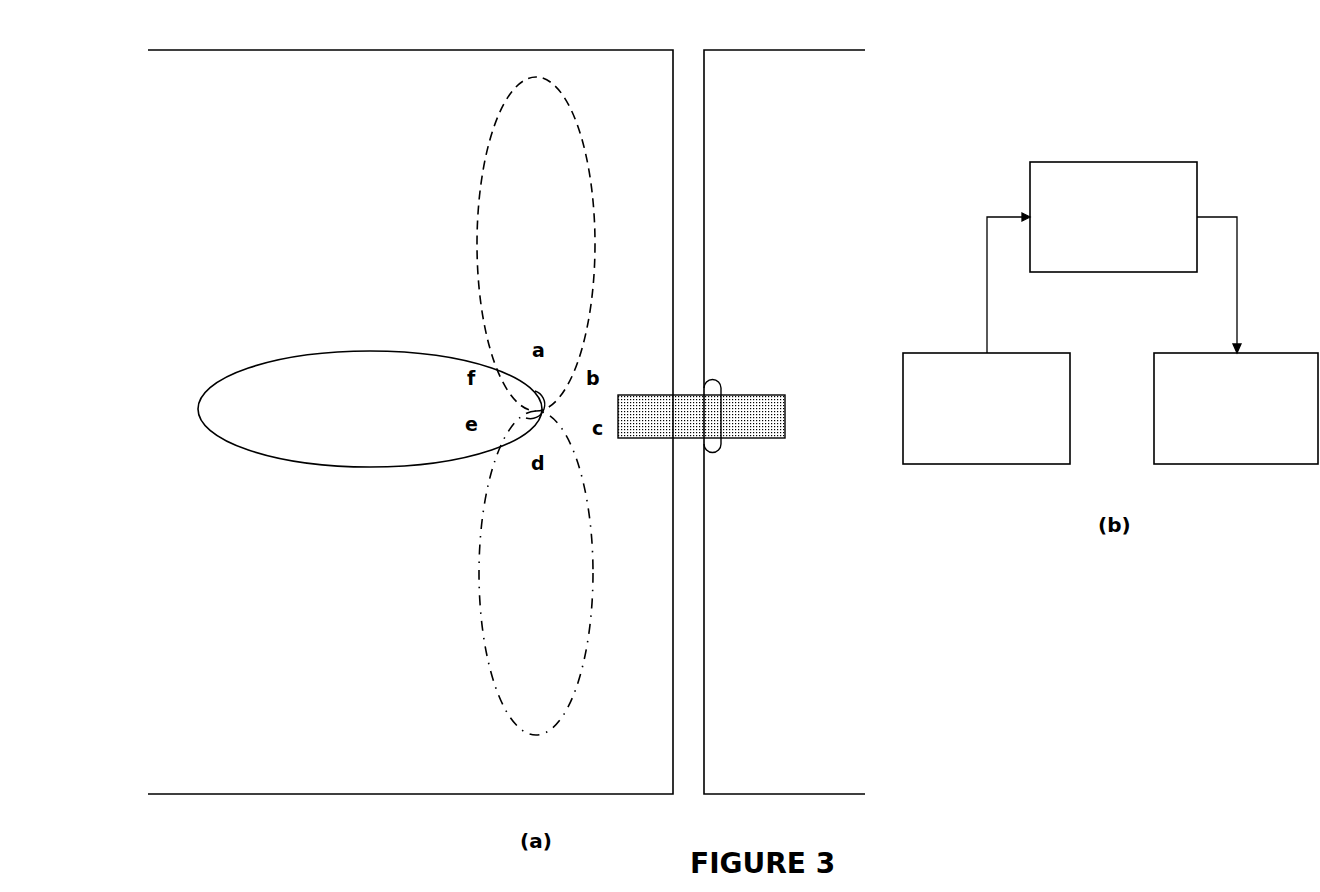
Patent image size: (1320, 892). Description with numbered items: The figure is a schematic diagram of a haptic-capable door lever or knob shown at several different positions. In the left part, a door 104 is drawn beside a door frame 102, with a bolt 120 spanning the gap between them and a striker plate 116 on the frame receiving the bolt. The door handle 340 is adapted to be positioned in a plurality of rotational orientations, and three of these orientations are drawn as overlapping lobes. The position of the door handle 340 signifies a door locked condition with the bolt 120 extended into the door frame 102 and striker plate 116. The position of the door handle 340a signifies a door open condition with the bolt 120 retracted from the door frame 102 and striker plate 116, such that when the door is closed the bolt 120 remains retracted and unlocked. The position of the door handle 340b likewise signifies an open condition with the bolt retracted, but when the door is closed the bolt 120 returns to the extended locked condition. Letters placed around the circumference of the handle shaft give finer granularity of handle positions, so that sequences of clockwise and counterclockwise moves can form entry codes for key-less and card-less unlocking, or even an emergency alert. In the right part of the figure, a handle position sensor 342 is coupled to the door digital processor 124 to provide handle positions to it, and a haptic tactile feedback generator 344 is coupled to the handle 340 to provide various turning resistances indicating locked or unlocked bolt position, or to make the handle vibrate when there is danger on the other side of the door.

The door frame 102 is at (732, 50).
The door 104 is at (640, 50).
The striker plate 116 is at (719, 387).
The bolt 120 is at (785, 422).
The door digital processor 124 is at (1141, 158).
The door handle 340 is at (215, 389).
The door handle (open position) 340a is at (483, 160).
The door handle (open position) 340b is at (482, 632).
The handle position sensor 342 is at (1030, 337).
The haptic tactile feedback generator 344 is at (1300, 337).